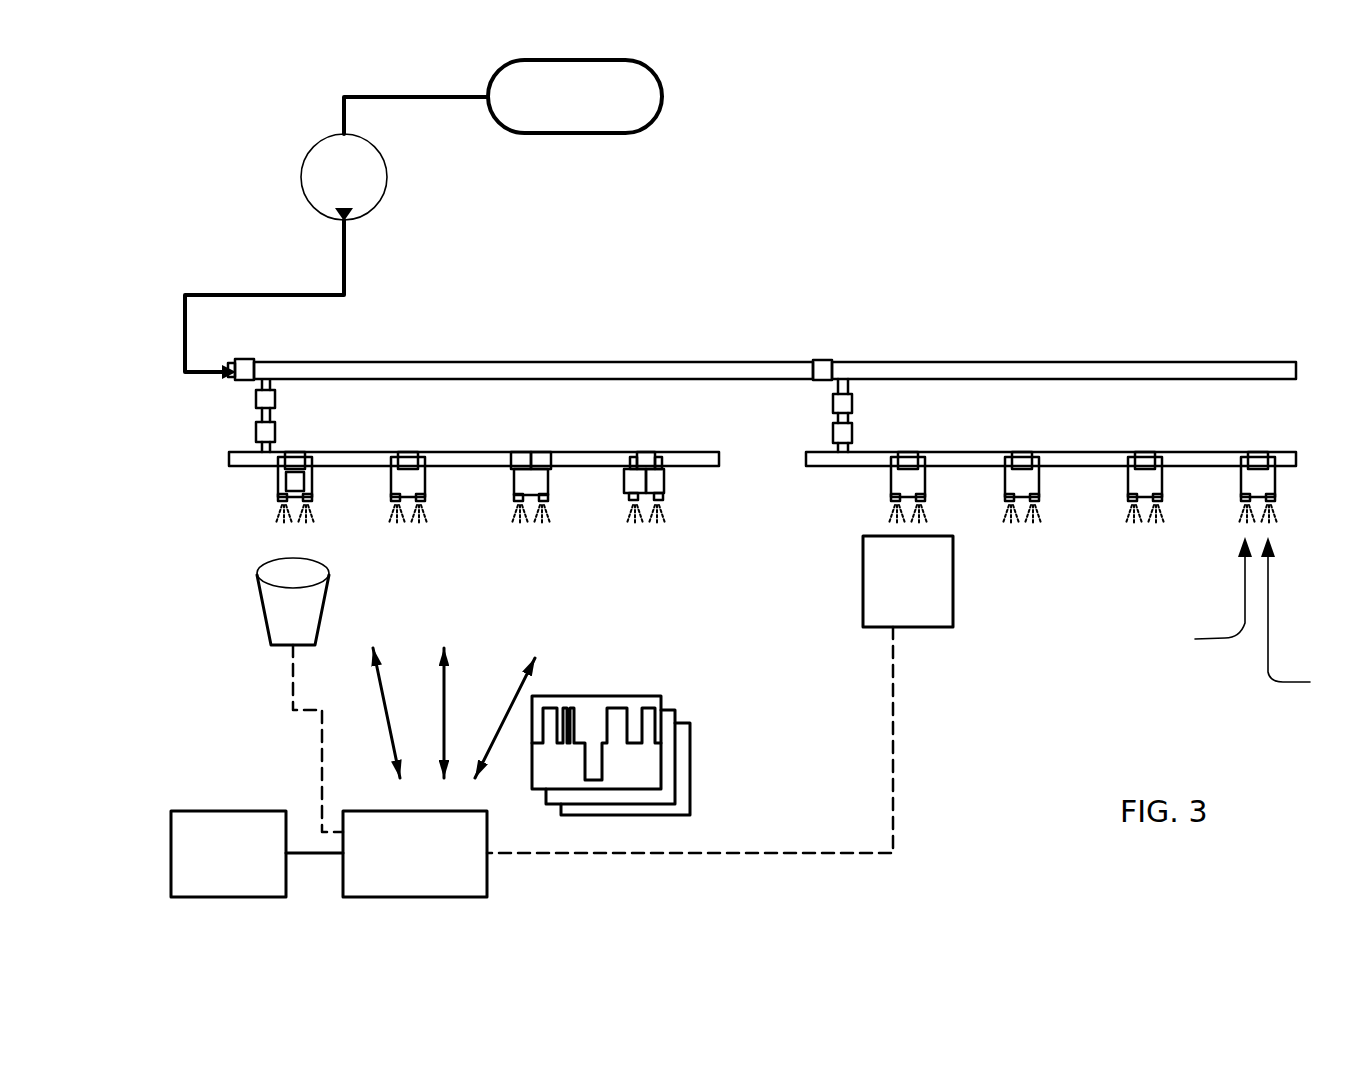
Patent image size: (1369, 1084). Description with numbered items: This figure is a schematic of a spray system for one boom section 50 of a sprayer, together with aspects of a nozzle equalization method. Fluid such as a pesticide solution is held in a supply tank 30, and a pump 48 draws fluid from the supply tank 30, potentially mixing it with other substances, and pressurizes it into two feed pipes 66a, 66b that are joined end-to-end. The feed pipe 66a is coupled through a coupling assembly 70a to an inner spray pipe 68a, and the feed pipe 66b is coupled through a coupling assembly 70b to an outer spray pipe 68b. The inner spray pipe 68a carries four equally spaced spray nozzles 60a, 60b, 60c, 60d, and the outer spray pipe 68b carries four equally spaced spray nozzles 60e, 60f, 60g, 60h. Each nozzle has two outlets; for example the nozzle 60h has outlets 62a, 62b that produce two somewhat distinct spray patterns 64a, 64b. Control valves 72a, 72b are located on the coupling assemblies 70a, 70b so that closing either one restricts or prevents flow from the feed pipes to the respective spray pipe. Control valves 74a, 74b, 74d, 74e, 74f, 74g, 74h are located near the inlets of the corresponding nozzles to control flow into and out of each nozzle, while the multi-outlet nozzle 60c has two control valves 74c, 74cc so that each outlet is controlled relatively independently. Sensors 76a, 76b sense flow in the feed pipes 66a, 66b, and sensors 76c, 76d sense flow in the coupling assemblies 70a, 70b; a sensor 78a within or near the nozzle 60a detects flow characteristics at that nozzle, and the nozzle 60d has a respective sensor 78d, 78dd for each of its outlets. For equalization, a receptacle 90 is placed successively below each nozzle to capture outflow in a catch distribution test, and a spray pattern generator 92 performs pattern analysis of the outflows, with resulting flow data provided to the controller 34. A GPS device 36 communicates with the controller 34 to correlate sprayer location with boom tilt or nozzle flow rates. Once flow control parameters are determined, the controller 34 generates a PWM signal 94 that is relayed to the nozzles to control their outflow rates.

The supply tank 30 is at (662, 90).
The controller 34 is at (450, 897).
The GPS device 36 is at (243, 897).
The pump 48 is at (312, 148).
The boom section 50 is at (945, 200).
The spray nozzle 60a is at (363, 407).
The spray nozzle 60b is at (448, 382).
The spray nozzle 60c is at (500, 404).
The spray nozzle 60d is at (663, 465).
The spray nozzle 60e is at (876, 451).
The spray nozzle 60f is at (1022, 408).
The spray nozzle 60g is at (1147, 309).
The spray nozzle 60h is at (1248, 497).
The outlet 62a is at (1191, 555).
The outlet 62b is at (1315, 566).
The spray pattern 64a is at (1196, 599).
The spray pattern 64b is at (1315, 622).
The feed pipe 66a is at (632, 363).
The feed pipe 66b is at (1195, 363).
The inner spray pipe 68a is at (590, 450).
The outer spray pipe 68b is at (1167, 452).
The coupling assembly 70a is at (342, 334).
The coupling assembly 70b is at (840, 393).
The control valve 72a is at (255, 432).
The control valve 72b is at (833, 432).
The control valve 74a is at (434, 337).
The control valve 74b is at (487, 355).
The control valve 74c is at (485, 396).
The control valve 74cc is at (515, 377).
The control valve 74d is at (700, 366).
The control valve 74e is at (946, 386).
The control valve 74f is at (1061, 381).
The control valve 74g is at (1182, 282).
The control valve 74h is at (1298, 378).
The sensor 76a is at (245, 359).
The sensor 76b is at (822, 360).
The sensor 76c is at (276, 393).
The sensor 76d is at (852, 400).
The sensor 78a is at (376, 540).
The sensor 78d is at (575, 542).
The sensor 78dd is at (733, 567).
The receptacle 90 is at (263, 623).
The spray pattern generator 92 is at (953, 595).
The PWM signal 94 is at (712, 744).